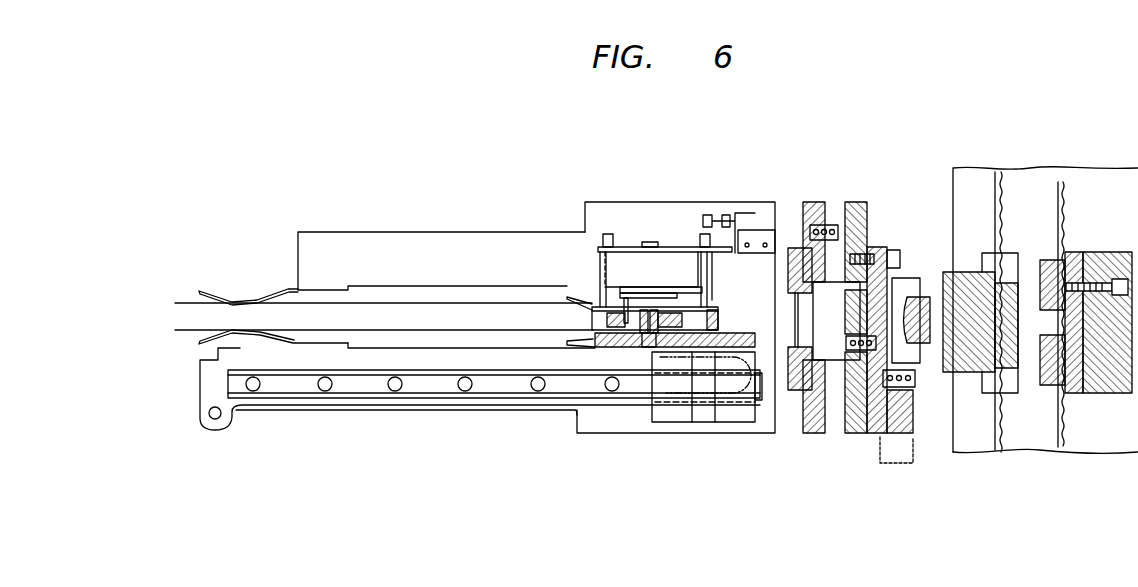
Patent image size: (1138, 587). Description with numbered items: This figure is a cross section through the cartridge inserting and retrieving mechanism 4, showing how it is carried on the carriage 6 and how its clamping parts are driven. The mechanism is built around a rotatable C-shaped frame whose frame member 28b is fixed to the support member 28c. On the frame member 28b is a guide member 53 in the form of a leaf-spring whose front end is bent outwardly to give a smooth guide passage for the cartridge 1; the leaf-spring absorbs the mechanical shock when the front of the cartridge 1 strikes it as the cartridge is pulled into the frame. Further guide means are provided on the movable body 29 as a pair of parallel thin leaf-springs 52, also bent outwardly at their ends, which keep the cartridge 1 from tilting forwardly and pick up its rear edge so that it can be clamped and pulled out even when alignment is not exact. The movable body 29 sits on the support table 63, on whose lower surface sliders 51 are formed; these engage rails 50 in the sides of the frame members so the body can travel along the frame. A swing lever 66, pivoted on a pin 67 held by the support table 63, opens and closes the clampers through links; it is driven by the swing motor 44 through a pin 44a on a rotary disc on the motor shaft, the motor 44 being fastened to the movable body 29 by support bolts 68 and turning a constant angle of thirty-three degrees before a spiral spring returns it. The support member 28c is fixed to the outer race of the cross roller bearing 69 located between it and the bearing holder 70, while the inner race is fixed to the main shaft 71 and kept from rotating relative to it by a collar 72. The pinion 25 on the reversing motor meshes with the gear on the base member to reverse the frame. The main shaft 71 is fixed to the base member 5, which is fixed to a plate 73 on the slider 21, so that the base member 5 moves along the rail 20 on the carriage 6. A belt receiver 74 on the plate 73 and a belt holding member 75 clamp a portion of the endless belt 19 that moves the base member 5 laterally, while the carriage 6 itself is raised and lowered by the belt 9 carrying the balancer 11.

The cartridge inserting and retrieving mechanism 4 is at (714, 183).
The C shaped frame member 28b is at (338, 231).
The leaf-spring guide member 53 is at (215, 291).
The cartridge 1 is at (417, 303).
The rail 50 is at (503, 394).
The leaf-spring guide means 52 is at (573, 298).
The support bolt 68 is at (600, 270).
The swing motor 44 is at (632, 258).
The pin 44a is at (592, 315).
The movable body 29 is at (682, 320).
The swing lever 66 is at (717, 312).
The pin 67 is at (646, 347).
The support table 63 is at (595, 348).
The slider 51 is at (737, 417).
The cross roller bearing 69 is at (803, 247).
The main shaft 71 is at (790, 433).
The support member 28c is at (817, 435).
The rail 20 is at (880, 298).
The bearing holder 70 is at (837, 223).
The pinion 25 is at (852, 435).
The collar 72 is at (862, 258).
The base member 5 is at (878, 252).
The plate 73 is at (898, 251).
The slider 21 is at (922, 270).
The carriage 6 is at (940, 385).
The belt receiver 74 is at (943, 405).
The belt 9 is at (1058, 437).
The balancer 11 is at (1105, 397).
The endless belt 19 is at (890, 463).
The belt holding member 75 is at (908, 435).